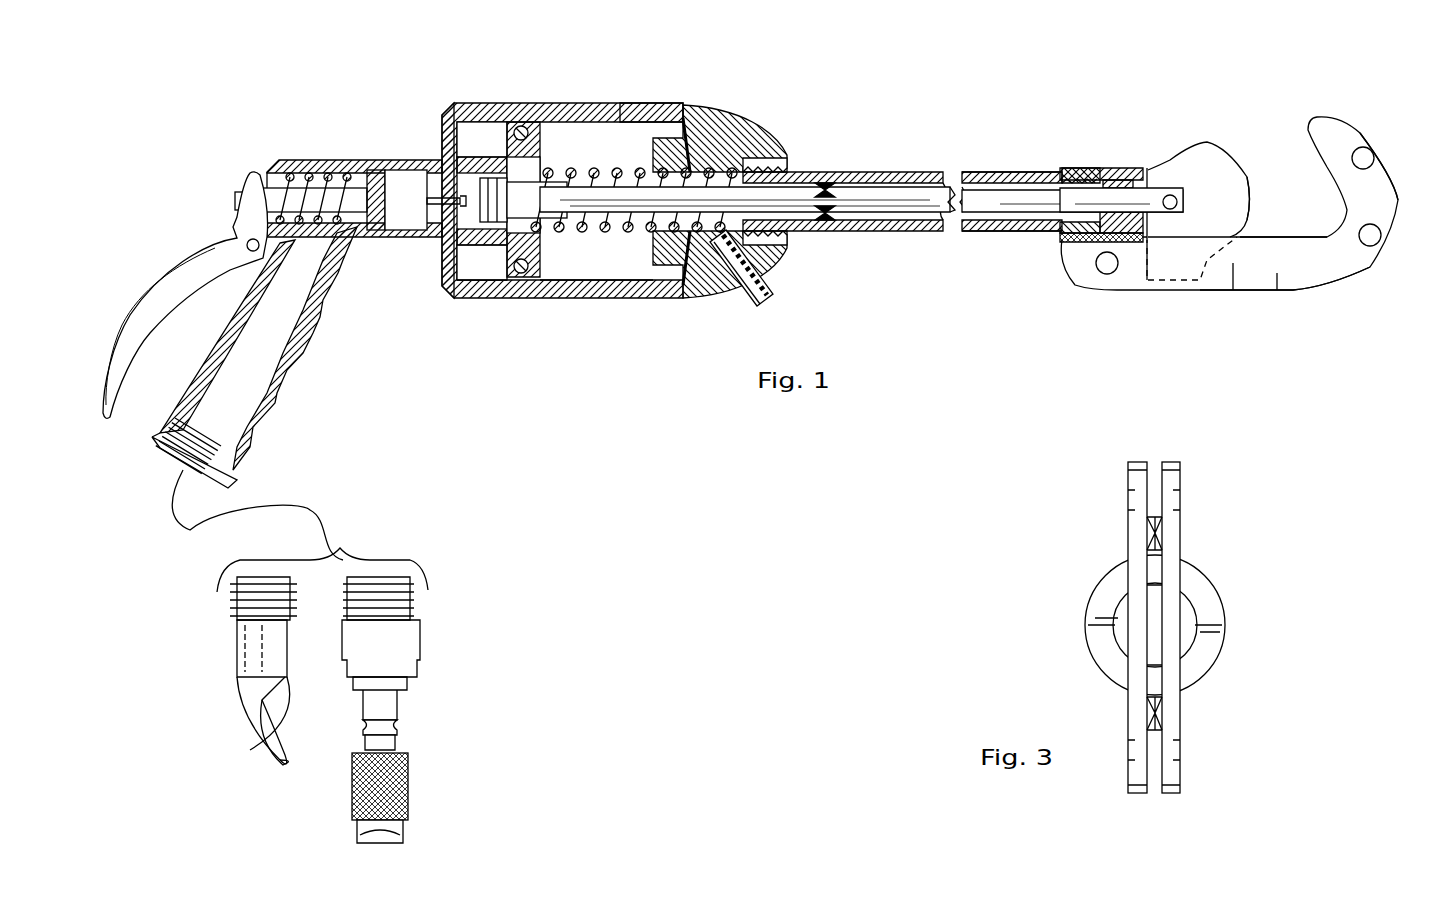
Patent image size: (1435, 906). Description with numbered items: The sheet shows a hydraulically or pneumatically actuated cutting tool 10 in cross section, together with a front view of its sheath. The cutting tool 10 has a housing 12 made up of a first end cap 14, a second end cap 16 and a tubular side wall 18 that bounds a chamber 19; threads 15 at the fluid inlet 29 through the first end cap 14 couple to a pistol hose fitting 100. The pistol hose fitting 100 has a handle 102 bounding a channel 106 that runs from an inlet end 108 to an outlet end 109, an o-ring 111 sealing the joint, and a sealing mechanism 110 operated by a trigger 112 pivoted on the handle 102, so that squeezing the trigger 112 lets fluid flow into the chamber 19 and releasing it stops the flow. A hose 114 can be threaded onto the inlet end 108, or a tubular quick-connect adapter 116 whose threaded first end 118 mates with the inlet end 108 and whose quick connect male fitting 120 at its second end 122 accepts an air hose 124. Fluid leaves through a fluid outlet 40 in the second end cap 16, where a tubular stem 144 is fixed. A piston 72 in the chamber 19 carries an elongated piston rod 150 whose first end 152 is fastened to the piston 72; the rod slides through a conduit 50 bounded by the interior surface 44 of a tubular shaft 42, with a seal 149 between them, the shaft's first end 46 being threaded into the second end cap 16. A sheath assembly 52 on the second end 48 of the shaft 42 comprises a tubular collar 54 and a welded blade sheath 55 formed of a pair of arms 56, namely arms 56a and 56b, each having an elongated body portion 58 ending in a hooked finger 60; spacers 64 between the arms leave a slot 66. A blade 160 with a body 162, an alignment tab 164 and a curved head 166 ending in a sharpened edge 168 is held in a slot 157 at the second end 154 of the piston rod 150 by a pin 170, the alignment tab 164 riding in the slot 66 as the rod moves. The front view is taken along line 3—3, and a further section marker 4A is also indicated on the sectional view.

In FIG. 1, the cutting tool 10 is at (628, 80).
In FIG. 1, the housing 12 is at (575, 110).
In FIG. 1, the first end cap 14 is at (435, 108).
In FIG. 1, the threads 15 is at (440, 160).
In FIG. 1, the second end cap 16 is at (735, 130).
In FIG. 1, the tubular side wall 18 is at (640, 108).
In FIG. 1, the chamber 19 is at (595, 290).
In FIG. 1, the fluid inlet 29 is at (472, 295).
In FIG. 1, the fluid outlet 40 is at (753, 293).
In FIG. 1, the tubular shaft 42 is at (905, 174).
In FIG. 1, the interior surface 44 is at (993, 174).
In FIG. 1, the first end 46 is at (780, 158).
In FIG. 1, the second end 48 is at (1082, 166).
In FIG. 1, the conduit 50 is at (870, 190).
In FIG. 1, the sheath assembly 52 is at (1270, 307).
In FIG. 3, the sheath assembly 52 is at (1235, 578).
In FIG. 1, the tubular collar 54 is at (1124, 166).
In FIG. 3, the tubular collar 54 is at (1226, 622).
In FIG. 1, the blade sheath 55 is at (1277, 273).
In FIG. 1, the arms 56 is at (1207, 287).
In FIG. 3, the arm 56a is at (1135, 527).
In FIG. 3, the arm 56b is at (1176, 537).
In FIG. 1, the elongated body portion 58 is at (1233, 263).
In FIG. 1, the hooked finger 60 is at (1385, 190).
In FIG. 3, the spacers 64 is at (1172, 520).
In FIG. 1, the slot 66 is at (1297, 237).
In FIG. 3, the slot 66 is at (1155, 768).
In FIG. 1, the piston 72 is at (532, 170).
In FIG. 1, the pistol hose fitting 100 is at (320, 388).
In FIG. 1, the handle 102 is at (283, 405).
In FIG. 1, the channel 106 is at (270, 338).
In FIG. 1, the inlet end 108 is at (240, 478).
In FIG. 1, the outlet end 109 is at (442, 230).
In FIG. 1, the sealing mechanism 110 is at (305, 195).
In FIG. 1, the o-ring 111 is at (478, 130).
In FIG. 1, the trigger 112 is at (175, 275).
In FIG. 1, the hose 114 is at (232, 592).
In FIG. 1, the tubular quick-connect adapter 116 is at (460, 632).
In FIG. 1, the threaded first end 118 is at (412, 600).
In FIG. 1, the quick connect male fitting 120 is at (402, 725).
In FIG. 1, the second end 122 is at (405, 742).
In FIG. 1, the air hose 124 is at (392, 797).
In FIG. 1, the tubular stem 144 is at (720, 293).
In FIG. 1, the seal 149 is at (830, 180).
In FIG. 1, the piston rod 150 is at (920, 208).
In FIG. 1, the first end 152 is at (575, 222).
In FIG. 1, the second end 154 is at (1140, 203).
In FIG. 1, the slot 157 is at (1163, 190).
In FIG. 1, the blade 160 is at (1237, 218).
In FIG. 1, the body 162 is at (1163, 227).
In FIG. 1, the alignment tab 164 is at (1167, 270).
In FIG. 1, the curved head 166 is at (1215, 155).
In FIG. 1, the sharpened edge 168 is at (1250, 178).
In FIG. 1, the pin 170 is at (1174, 195).
In FIG. 1, the line 3— 3 is at (1403, 130).
In FIG. 1, the section line 4A- 4A is at (493, 148).